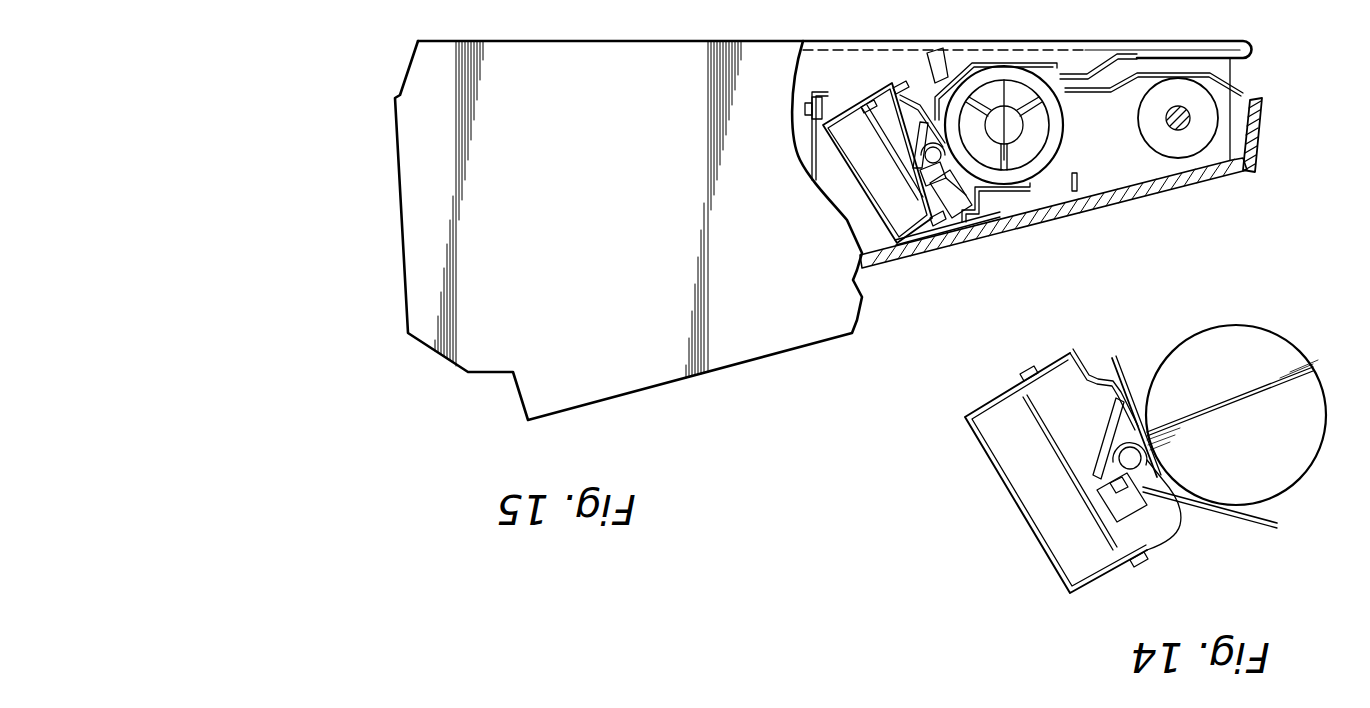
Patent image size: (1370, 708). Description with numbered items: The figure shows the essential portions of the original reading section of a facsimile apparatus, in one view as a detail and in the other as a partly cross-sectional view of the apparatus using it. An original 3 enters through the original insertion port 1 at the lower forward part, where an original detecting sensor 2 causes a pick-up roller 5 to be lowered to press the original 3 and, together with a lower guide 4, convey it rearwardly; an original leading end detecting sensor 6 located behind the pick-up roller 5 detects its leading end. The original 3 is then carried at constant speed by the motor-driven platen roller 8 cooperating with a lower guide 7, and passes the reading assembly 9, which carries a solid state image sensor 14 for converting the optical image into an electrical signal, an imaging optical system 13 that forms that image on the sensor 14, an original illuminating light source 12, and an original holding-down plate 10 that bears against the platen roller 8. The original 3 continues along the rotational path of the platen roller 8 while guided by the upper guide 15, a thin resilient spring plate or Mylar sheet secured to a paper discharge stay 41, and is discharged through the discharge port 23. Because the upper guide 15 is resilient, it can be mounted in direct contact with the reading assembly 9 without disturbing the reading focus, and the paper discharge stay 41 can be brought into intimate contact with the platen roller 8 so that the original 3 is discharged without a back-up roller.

In FIG. 15, the original insertion port 1 is at (1256, 79).
In FIG. 15, the original detecting sensor 2 is at (1137, 58).
In FIG. 14, the original 3 is at (1122, 378).
In FIG. 15, the lower guide 4 is at (1102, 62).
In FIG. 15, the pick-up roller 5 is at (1160, 128).
In FIG. 15, the original leading end detecting sensor 6 is at (931, 50).
In FIG. 15, the lower guide 7 is at (1034, 62).
In FIG. 15, the platen roller 8 is at (1063, 133).
In FIG. 14, the platen roller 8 is at (1302, 447).
In FIG. 15, the reading assembly 9 is at (856, 105).
In FIG. 14, the reading assembly 9 is at (973, 448).
In FIG. 15, the original holding-down plate 10 is at (920, 65).
In FIG. 14, the original holding-down plate 10 is at (1083, 373).
In FIG. 15, the original illuminating light source 12 is at (923, 153).
In FIG. 14, the original illuminating light source 12 is at (1118, 457).
In FIG. 15, the imaging optical system 13 is at (920, 197).
In FIG. 14, the imaging optical system 13 is at (1137, 520).
In FIG. 15, the solid state image sensor 14 is at (886, 166).
In FIG. 14, the solid state image sensor 14 is at (1087, 513).
In FIG. 15, the upper guide 15 is at (925, 230).
In FIG. 14, the upper guide 15 is at (1232, 517).
In FIG. 15, the discharge port 23 is at (1080, 207).
In FIG. 15, the paper discharge stay 41 is at (965, 222).